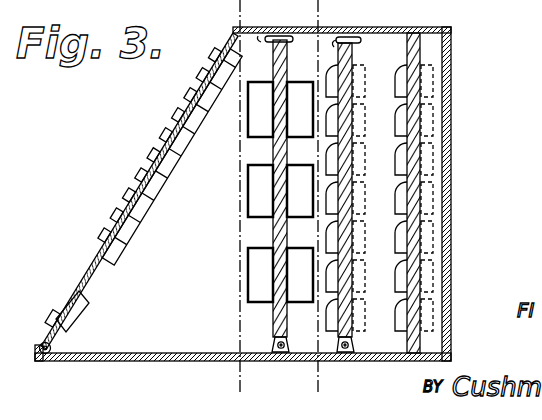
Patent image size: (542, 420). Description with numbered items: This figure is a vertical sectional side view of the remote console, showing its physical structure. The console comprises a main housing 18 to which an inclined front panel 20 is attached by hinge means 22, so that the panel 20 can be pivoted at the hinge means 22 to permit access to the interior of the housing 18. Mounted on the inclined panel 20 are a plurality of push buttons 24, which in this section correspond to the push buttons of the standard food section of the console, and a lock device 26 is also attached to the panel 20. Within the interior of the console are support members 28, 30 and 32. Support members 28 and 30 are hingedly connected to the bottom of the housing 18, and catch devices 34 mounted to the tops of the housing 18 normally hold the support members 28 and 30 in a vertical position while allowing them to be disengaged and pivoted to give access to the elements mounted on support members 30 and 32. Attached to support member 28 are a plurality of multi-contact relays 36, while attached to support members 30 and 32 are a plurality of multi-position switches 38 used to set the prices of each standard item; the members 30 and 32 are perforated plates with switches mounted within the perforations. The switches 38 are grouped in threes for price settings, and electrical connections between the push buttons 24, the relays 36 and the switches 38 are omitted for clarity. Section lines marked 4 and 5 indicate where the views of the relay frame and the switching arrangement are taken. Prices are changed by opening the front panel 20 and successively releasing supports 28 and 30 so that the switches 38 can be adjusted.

The main housing 18 is at (449, 142).
The inclined front panel 20 is at (88, 266).
The hinge means 22 is at (51, 347).
The push buttons 24 is at (129, 186).
The lock device 26 is at (65, 297).
The support member 28 is at (273, 232).
The support member 30 is at (363, 197).
The support member 32 is at (412, 253).
The catch devices 34 is at (334, 42).
The multi-contact relays 36 is at (253, 117).
The multi-position switches 38 is at (327, 220).
The section line 4- 4 is at (240, 383).
The section line 5- 5 is at (318, 383).